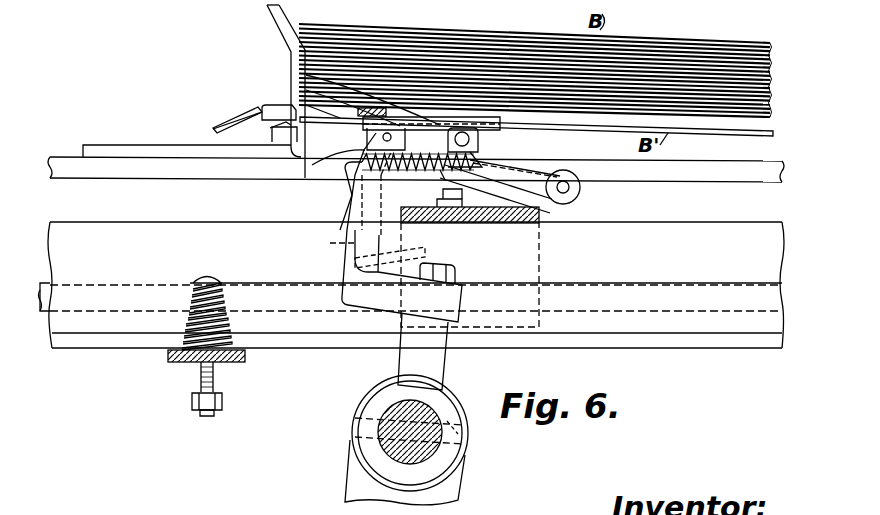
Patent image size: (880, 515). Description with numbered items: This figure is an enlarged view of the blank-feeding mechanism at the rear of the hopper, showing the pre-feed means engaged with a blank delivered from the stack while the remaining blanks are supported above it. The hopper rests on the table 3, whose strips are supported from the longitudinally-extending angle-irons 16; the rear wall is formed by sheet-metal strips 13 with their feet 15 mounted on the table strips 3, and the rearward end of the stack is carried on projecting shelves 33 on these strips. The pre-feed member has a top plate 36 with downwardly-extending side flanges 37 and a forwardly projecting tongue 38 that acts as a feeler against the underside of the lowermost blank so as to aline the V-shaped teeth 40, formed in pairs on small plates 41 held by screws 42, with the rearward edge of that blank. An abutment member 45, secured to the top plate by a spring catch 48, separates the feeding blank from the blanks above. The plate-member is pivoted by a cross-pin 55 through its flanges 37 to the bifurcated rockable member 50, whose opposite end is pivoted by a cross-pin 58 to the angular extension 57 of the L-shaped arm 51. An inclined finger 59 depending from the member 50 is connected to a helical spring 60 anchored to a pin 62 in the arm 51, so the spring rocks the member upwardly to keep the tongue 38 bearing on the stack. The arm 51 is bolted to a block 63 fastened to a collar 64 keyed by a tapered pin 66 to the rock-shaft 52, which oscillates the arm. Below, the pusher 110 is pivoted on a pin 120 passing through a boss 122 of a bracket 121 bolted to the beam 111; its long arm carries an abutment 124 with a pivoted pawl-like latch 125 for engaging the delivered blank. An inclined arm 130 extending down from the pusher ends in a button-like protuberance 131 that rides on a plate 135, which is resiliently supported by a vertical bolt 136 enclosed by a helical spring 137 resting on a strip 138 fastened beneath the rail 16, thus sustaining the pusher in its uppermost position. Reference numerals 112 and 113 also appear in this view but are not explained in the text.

The table 3 is at (210, 170).
The sheet-metal strips 13 is at (285, 38).
The feet 15 is at (145, 153).
The angle-irons 16 is at (150, 232).
The projecting shelves 33 is at (279, 113).
The top plate 36 is at (380, 135).
The side flanges 37 is at (305, 152).
The tongue 38 is at (440, 120).
The teeth 40 is at (306, 75).
The plates 41 is at (306, 88).
The screws 42 is at (340, 150).
The abutment member 45 is at (306, 105).
The spring catch 48 is at (284, 134).
The rockable member 50 is at (478, 130).
The L-shaped arm 51 is at (346, 243).
The rock-shaft 52 is at (392, 418).
The cross-pin 55 is at (350, 180).
The angular extension 57 is at (478, 158).
The cross-pin 58 is at (480, 138).
The inclined finger 59 is at (505, 165).
The helical spring 60 is at (443, 172).
The pin 62 is at (365, 180).
The block 63 is at (428, 366).
The collar 64 is at (445, 415).
The tapered pin 66 is at (455, 420).
The pusher 110 is at (232, 118).
The beam 111 is at (510, 222).
The housing 112 is at (540, 272).
The rod 113 is at (44, 283).
The pins 120 is at (575, 186).
The brackets 121 is at (560, 202).
The bosses 122 is at (575, 200).
The abutment 124 is at (282, 106).
The latch 125 is at (272, 130).
The inclined arm 130 is at (352, 193).
The protuberance 131 is at (356, 265).
The plate 135 is at (296, 282).
The bolt 136 is at (203, 368).
The helical spring 137 is at (230, 325).
The strip 138 is at (168, 356).